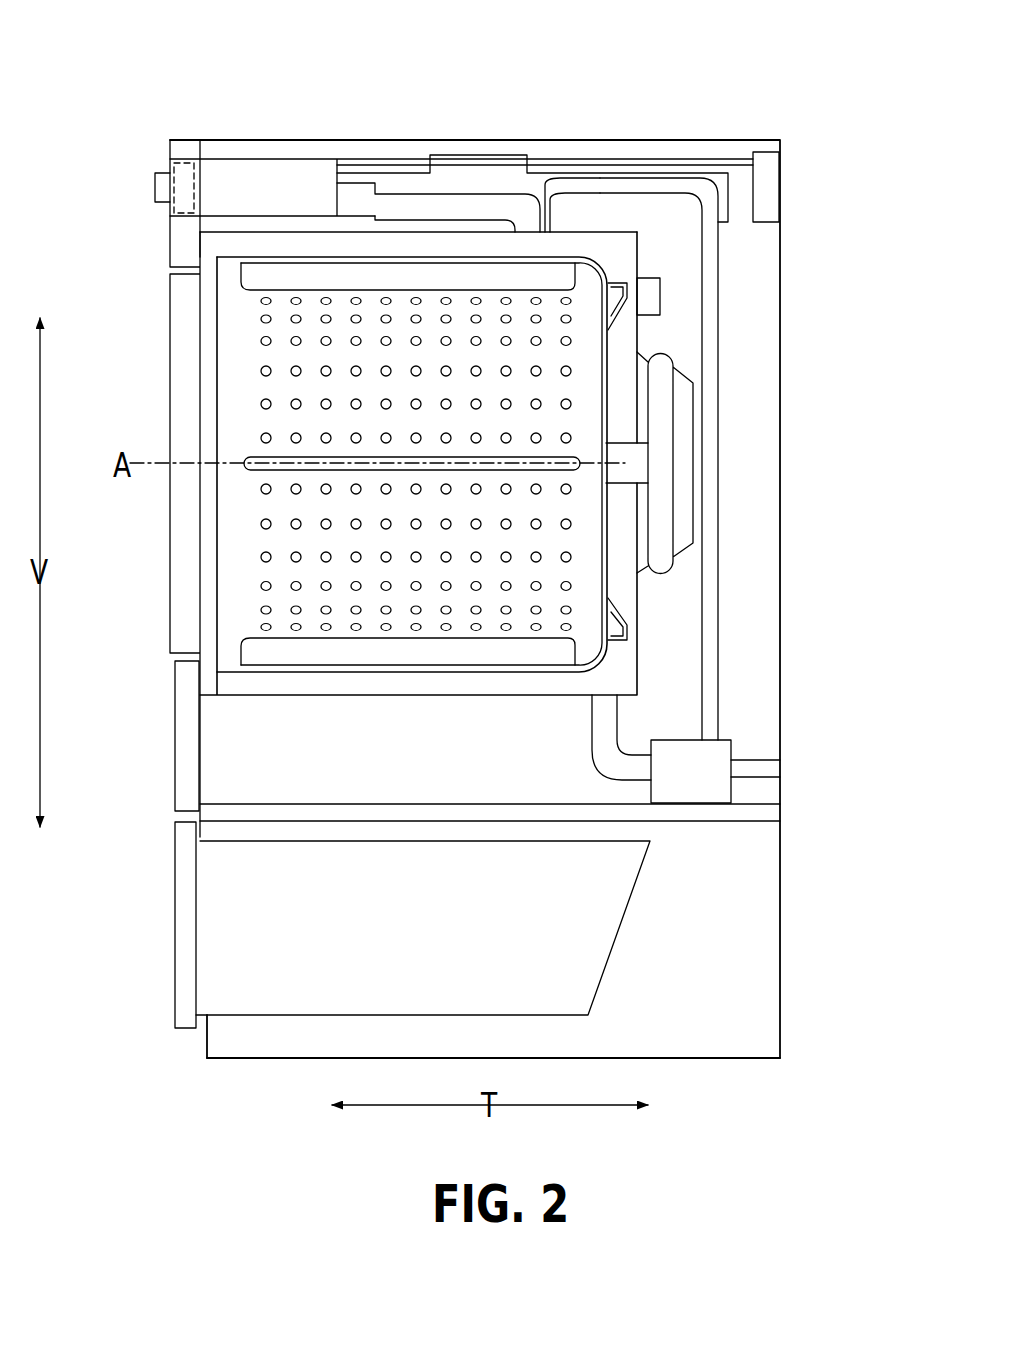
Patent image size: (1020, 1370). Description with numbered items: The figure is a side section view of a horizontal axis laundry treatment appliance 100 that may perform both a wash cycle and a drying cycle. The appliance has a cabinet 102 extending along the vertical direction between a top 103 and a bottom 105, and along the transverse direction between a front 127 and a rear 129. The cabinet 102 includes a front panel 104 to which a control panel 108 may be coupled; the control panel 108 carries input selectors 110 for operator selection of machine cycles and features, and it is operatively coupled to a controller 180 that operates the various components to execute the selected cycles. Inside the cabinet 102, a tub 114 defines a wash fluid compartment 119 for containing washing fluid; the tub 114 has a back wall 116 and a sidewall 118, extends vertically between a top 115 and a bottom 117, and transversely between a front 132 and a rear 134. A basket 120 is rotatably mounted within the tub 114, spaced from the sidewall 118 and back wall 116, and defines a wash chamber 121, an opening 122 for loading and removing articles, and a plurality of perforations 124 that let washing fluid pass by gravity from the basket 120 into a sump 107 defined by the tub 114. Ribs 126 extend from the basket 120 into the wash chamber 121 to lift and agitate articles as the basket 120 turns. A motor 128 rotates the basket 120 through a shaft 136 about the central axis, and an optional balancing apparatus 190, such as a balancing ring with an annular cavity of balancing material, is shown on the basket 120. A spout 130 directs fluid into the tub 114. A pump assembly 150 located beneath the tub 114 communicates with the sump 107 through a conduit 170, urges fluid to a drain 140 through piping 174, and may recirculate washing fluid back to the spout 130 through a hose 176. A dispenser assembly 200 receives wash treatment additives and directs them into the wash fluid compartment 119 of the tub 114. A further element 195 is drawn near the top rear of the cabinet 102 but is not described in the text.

The laundry treatment appliance 100 is at (246, 94).
The cabinet 102 is at (780, 515).
The top 103 is at (781, 150).
The front panel 104 is at (174, 721).
The bottom 105 is at (791, 1044).
The sump 107 is at (434, 686).
The control panel 108 is at (169, 157).
The input selectors 110 is at (180, 215).
The tub 114 is at (652, 300).
The top 115 is at (319, 227).
The back wall 116 is at (650, 623).
The bottom 117 is at (510, 697).
The sidewall 118 is at (645, 675).
The wash fluid compartment 119 is at (229, 246).
The basket 120 is at (597, 541).
The wash chamber 121 is at (229, 321).
The opening 122 is at (204, 517).
The perforations 124 is at (292, 396).
The ribs 126 is at (256, 652).
The front 127 is at (192, 1053).
The motor 128 is at (661, 432).
The rear 129 is at (762, 1069).
The spout 130 is at (530, 227).
The front 132 is at (214, 224).
The rear 134 is at (625, 227).
The shaft 136 is at (620, 470).
The drain 140 is at (779, 767).
The pump assembly 150 is at (722, 755).
The conduit 170 is at (624, 767).
The piping 174 is at (757, 765).
The hose 176 is at (710, 342).
The controller 180 is at (160, 166).
The balancing apparatus 190 is at (616, 280).
The rear vent 195 is at (780, 173).
The dispenser assembly 200 is at (445, 134).